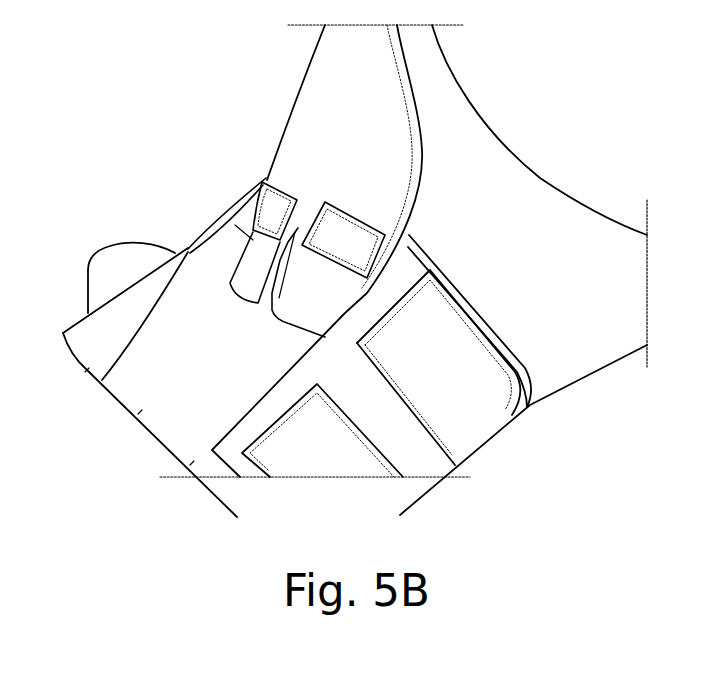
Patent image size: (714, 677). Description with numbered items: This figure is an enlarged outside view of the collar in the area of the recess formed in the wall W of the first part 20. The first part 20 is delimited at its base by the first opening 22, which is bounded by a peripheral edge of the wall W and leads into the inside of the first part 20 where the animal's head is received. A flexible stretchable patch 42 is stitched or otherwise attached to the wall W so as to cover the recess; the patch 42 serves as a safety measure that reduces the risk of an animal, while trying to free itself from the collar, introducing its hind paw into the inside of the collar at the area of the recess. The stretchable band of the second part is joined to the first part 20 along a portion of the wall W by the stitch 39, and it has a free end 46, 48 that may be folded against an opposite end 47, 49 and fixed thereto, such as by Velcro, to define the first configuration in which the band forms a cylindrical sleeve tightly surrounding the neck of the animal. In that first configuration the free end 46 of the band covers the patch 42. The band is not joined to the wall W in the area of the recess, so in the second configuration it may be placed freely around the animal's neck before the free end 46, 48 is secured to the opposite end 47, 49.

The first part 20 is at (484, 224).
The first opening 22 is at (502, 140).
The stitch 39 is at (537, 397).
The flexible stretchable patch 42 is at (285, 110).
The free end of the band 46 is at (110, 243).
The opposite end of the band 47 is at (320, 467).
The free end of the band 48 is at (212, 220).
The opposite end of the band 49 is at (487, 423).
The wall W is at (597, 353).